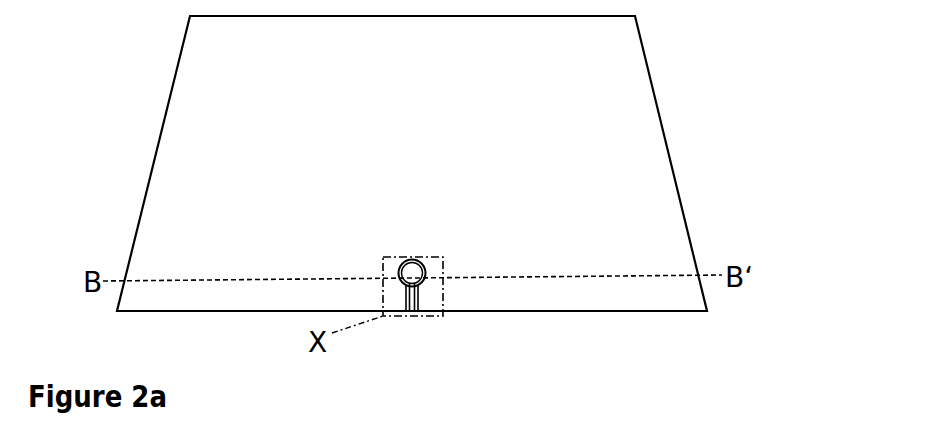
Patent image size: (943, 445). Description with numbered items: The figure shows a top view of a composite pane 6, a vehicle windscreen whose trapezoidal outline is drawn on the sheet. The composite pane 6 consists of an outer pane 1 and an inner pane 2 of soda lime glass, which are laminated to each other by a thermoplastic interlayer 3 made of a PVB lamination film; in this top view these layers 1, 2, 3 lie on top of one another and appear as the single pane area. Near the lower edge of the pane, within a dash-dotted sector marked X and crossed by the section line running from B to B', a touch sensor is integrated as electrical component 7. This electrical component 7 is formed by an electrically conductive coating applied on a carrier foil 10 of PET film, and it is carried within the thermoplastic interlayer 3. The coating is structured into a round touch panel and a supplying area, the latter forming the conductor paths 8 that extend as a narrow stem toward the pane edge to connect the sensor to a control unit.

The outer pane 1 is at (467, 163).
The inner pane 2 is at (412, 163).
The thermoplastic interlayer 3 is at (657, 230).
The composite pane 6 is at (467, 155).
The electrical component 7 is at (504, 315).
The conductor paths 8 is at (412, 286).
The carrier foil 10 is at (418, 290).